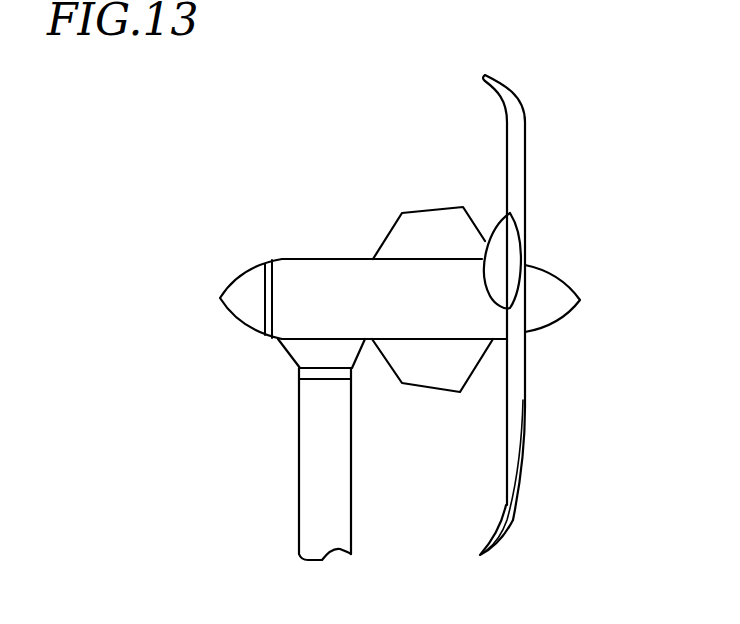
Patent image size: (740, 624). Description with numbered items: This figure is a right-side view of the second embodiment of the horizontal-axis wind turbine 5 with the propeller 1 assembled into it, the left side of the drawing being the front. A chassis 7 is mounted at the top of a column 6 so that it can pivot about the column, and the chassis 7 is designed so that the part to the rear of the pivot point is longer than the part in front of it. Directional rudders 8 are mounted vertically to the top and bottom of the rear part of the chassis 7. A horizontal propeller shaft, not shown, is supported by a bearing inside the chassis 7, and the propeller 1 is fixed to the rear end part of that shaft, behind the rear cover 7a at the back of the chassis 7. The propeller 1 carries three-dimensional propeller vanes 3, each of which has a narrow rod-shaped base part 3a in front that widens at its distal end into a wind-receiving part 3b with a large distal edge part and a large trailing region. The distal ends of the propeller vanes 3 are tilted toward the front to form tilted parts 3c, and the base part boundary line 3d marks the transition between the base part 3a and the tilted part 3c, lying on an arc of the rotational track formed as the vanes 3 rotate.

The propeller 1 is at (534, 184).
The propeller vane 3 is at (525, 258).
The base part 3a is at (525, 357).
The wind-receiving part 3b is at (506, 470).
The tilted part 3c is at (518, 98).
The base part boundary line 3d is at (505, 514).
The horizontal-axis wind turbine 5 is at (323, 150).
The column 6 is at (299, 493).
The chassis 7 is at (285, 258).
The rear cover 7a is at (563, 283).
The directional rudder 8 is at (390, 236).